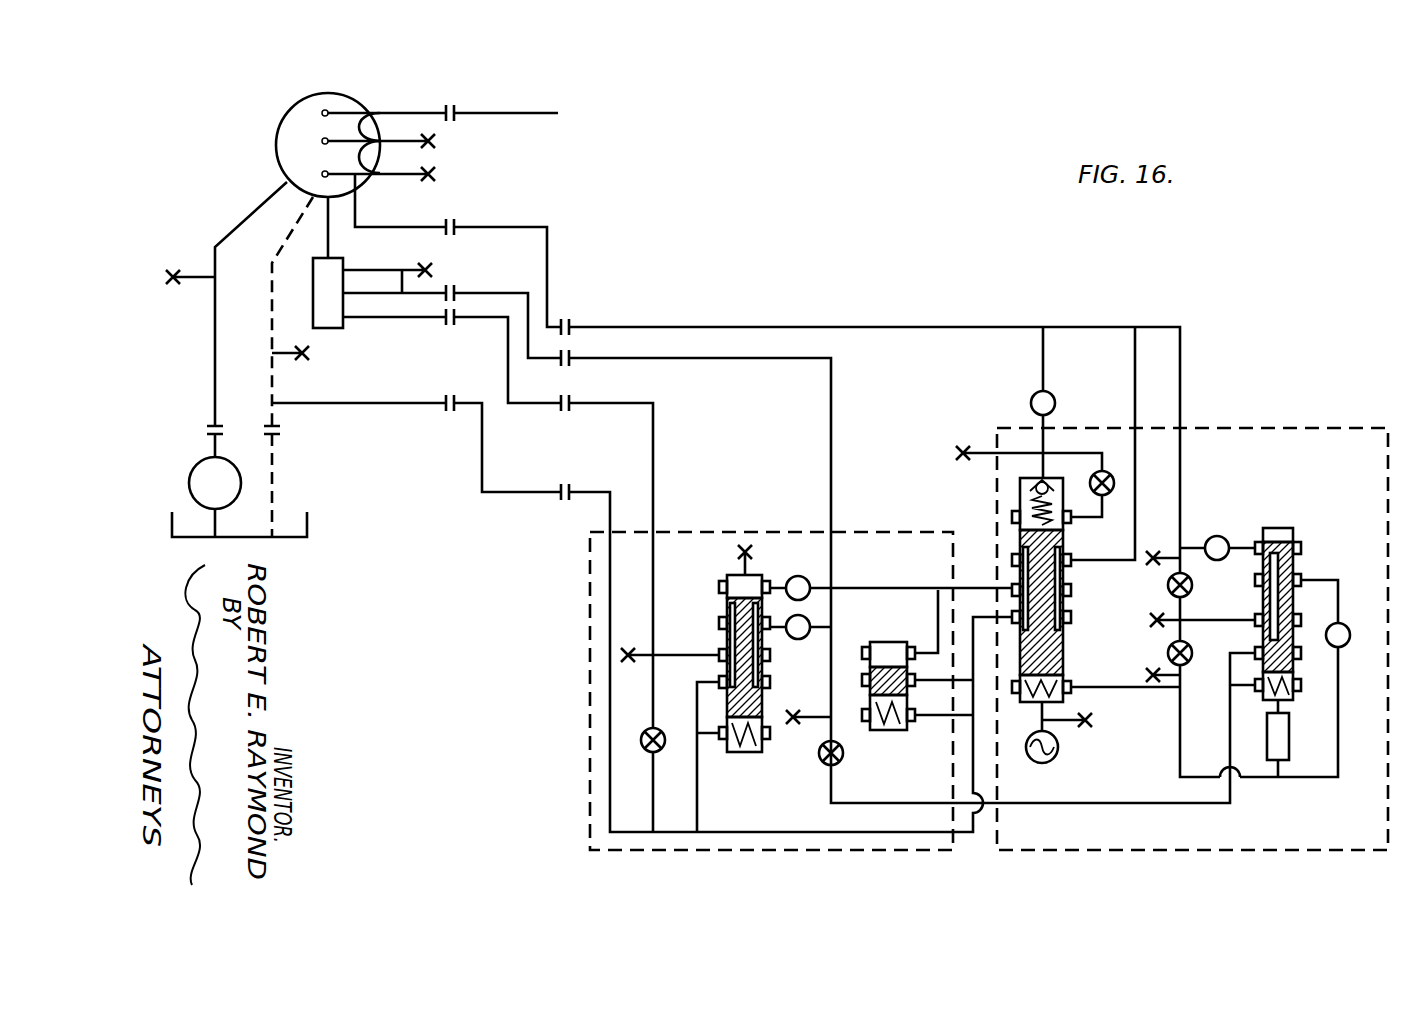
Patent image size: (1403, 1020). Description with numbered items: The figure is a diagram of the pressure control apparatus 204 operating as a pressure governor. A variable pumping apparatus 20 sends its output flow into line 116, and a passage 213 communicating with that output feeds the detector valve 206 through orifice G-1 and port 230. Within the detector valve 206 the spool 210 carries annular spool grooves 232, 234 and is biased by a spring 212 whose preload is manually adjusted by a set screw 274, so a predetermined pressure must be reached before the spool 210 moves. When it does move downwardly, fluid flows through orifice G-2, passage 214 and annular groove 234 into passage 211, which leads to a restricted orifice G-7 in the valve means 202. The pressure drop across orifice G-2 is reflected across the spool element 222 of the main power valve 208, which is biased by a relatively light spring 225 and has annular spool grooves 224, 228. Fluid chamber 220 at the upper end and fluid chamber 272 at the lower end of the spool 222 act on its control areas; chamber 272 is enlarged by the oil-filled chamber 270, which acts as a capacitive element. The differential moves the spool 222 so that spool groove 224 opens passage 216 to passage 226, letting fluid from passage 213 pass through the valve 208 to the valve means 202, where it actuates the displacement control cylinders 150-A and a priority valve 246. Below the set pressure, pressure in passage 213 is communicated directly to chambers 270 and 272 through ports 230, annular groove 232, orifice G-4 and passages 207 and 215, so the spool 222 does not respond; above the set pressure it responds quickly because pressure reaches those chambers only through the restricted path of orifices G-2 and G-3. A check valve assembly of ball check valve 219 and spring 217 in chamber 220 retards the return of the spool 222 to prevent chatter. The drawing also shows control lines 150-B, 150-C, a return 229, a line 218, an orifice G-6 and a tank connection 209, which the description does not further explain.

The variable pumping apparatus 20 is at (272, 123).
The line 116 is at (408, 113).
The displacement control cylinders 150-A is at (362, 275).
The control line 150-B is at (367, 320).
The control line 150-C is at (405, 320).
The return 229 is at (288, 547).
The valve means 202 is at (578, 592).
The priority valve 246 is at (718, 599).
The passage 226 is at (970, 590).
The passage 209 is at (605, 797).
The restricted orifice G-7 is at (819, 760).
The passage 213 is at (750, 327).
The line 218 is at (1043, 360).
The passage 216 is at (1135, 357).
The ball check valve 219 is at (1012, 478).
The main power valve 208 is at (997, 628).
The fluid chamber 220 is at (1077, 478).
The gauge G-6 is at (1112, 478).
The spring 217 is at (1036, 497).
The annular spool groove 224 is at (1018, 547).
The movable spool element 222 is at (1060, 535).
The annular spool groove 228 is at (1060, 605).
The spring 225 is at (1050, 686).
The passage 215 is at (1112, 690).
The chamber 270 is at (1056, 742).
The fluid chamber 272 is at (1022, 704).
The orifice G-2 is at (1167, 587).
The passage 214 is at (1227, 604).
The annular spool groove 234 is at (1256, 622).
The orifice G-3 is at (1190, 656).
The passage 211 is at (1110, 808).
The pressure control apparatus 204 is at (1306, 420).
The detector valve 206 is at (1291, 523).
The orifice G-1 is at (1212, 543).
The ports 230 is at (1262, 542).
The annular spool groove 232 is at (1313, 545).
The spool 210 is at (1297, 588).
The passage 207 is at (1340, 600).
The orifice G-4 is at (1350, 637).
The spring 212 is at (1310, 763).
The set screw 274 is at (1283, 752).